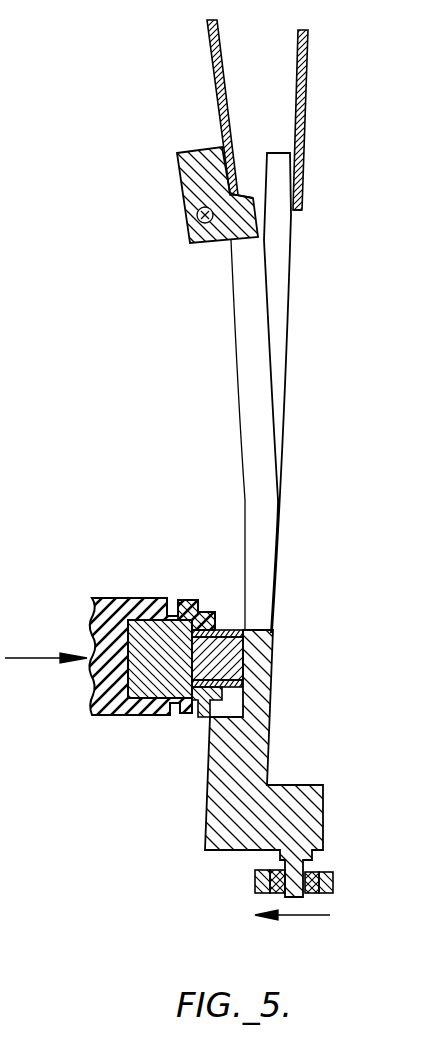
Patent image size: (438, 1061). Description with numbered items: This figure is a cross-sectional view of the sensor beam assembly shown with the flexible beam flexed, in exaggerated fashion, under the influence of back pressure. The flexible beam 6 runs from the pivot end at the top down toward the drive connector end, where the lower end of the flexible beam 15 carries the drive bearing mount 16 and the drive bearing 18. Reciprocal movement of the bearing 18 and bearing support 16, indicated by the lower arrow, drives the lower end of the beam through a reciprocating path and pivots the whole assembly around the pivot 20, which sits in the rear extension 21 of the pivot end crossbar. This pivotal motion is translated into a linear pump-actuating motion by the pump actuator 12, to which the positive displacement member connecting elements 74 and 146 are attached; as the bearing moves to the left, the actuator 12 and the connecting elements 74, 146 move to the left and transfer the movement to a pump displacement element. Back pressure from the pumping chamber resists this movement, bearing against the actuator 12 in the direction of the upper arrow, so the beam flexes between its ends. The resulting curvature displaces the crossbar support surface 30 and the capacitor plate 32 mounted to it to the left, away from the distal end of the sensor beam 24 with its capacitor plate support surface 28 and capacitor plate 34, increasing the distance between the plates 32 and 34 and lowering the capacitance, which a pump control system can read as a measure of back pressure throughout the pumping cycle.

The flexible right beam 6 is at (260, 482).
The pump actuator projection 12 is at (193, 713).
The frontal projection of the drive connector end 15 is at (307, 818).
The drive bearing mount 16 is at (293, 903).
The drive bearing 18 is at (255, 873).
The pivot 20 is at (190, 227).
The rear extension of the crossbar 21 is at (180, 200).
The sensor beam 24 is at (278, 345).
The capacitor plate support surface 28 is at (302, 192).
The capacitor plate support surface of the crossbar 30 is at (235, 160).
The capacitor plate 32 is at (208, 60).
The capacitor plate 34 is at (310, 60).
The positive displacement member connecting element 74 is at (152, 636).
The positive displacement member connecting element 146 is at (103, 598).